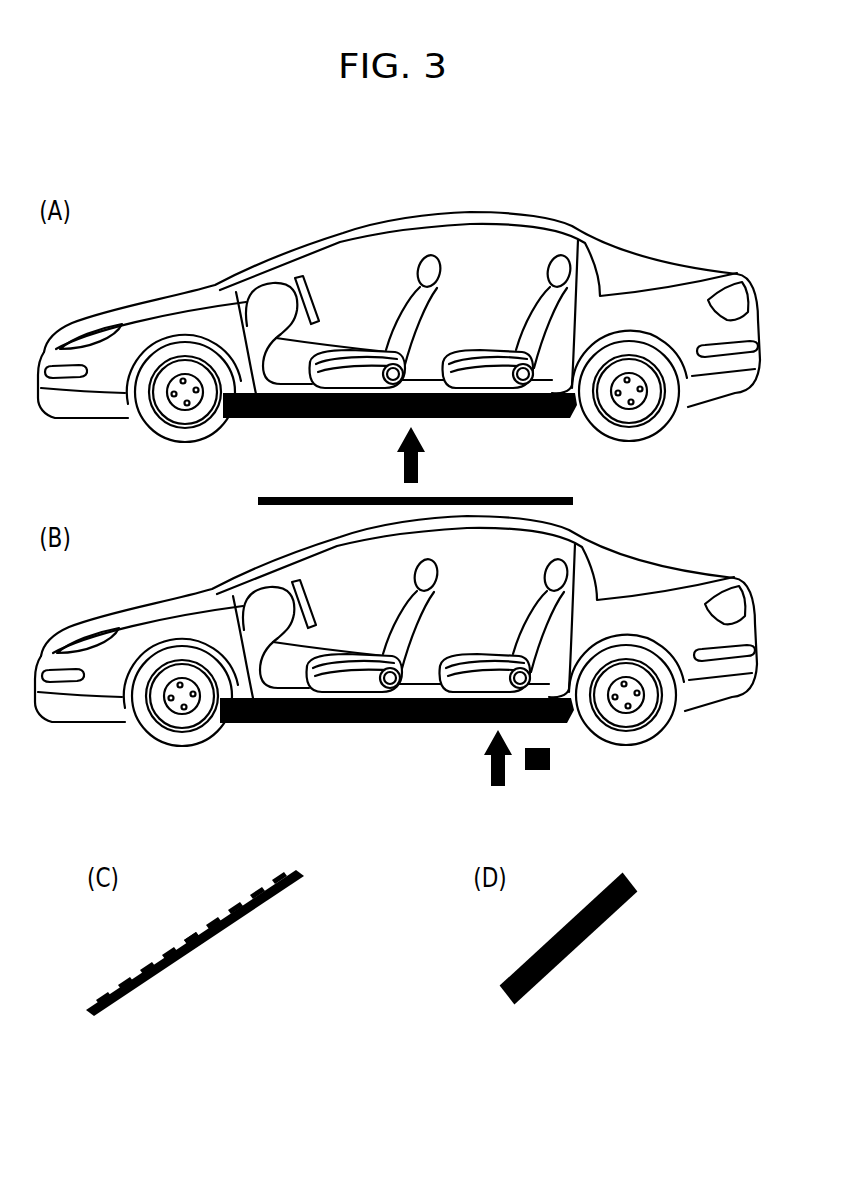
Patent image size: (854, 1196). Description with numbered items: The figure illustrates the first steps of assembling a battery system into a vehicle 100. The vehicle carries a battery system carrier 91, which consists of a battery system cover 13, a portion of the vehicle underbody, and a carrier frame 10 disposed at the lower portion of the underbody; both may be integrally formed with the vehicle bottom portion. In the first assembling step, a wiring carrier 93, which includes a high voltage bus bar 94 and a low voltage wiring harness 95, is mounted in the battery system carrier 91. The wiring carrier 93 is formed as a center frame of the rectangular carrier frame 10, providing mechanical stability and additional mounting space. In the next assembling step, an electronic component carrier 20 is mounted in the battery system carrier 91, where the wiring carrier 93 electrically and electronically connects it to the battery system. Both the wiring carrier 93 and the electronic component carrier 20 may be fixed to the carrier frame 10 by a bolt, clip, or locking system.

The vehicle 100 is at (212, 229).
The battery system carrier 91 is at (493, 419).
The carrier frame 10 is at (250, 727).
The battery system cover 13 is at (305, 727).
The wiring carrier 93 is at (578, 501).
The high voltage bus bar 94 is at (213, 935).
The low voltage wiring harness 95 is at (195, 952).
The electronic component carrier 20 is at (553, 758).